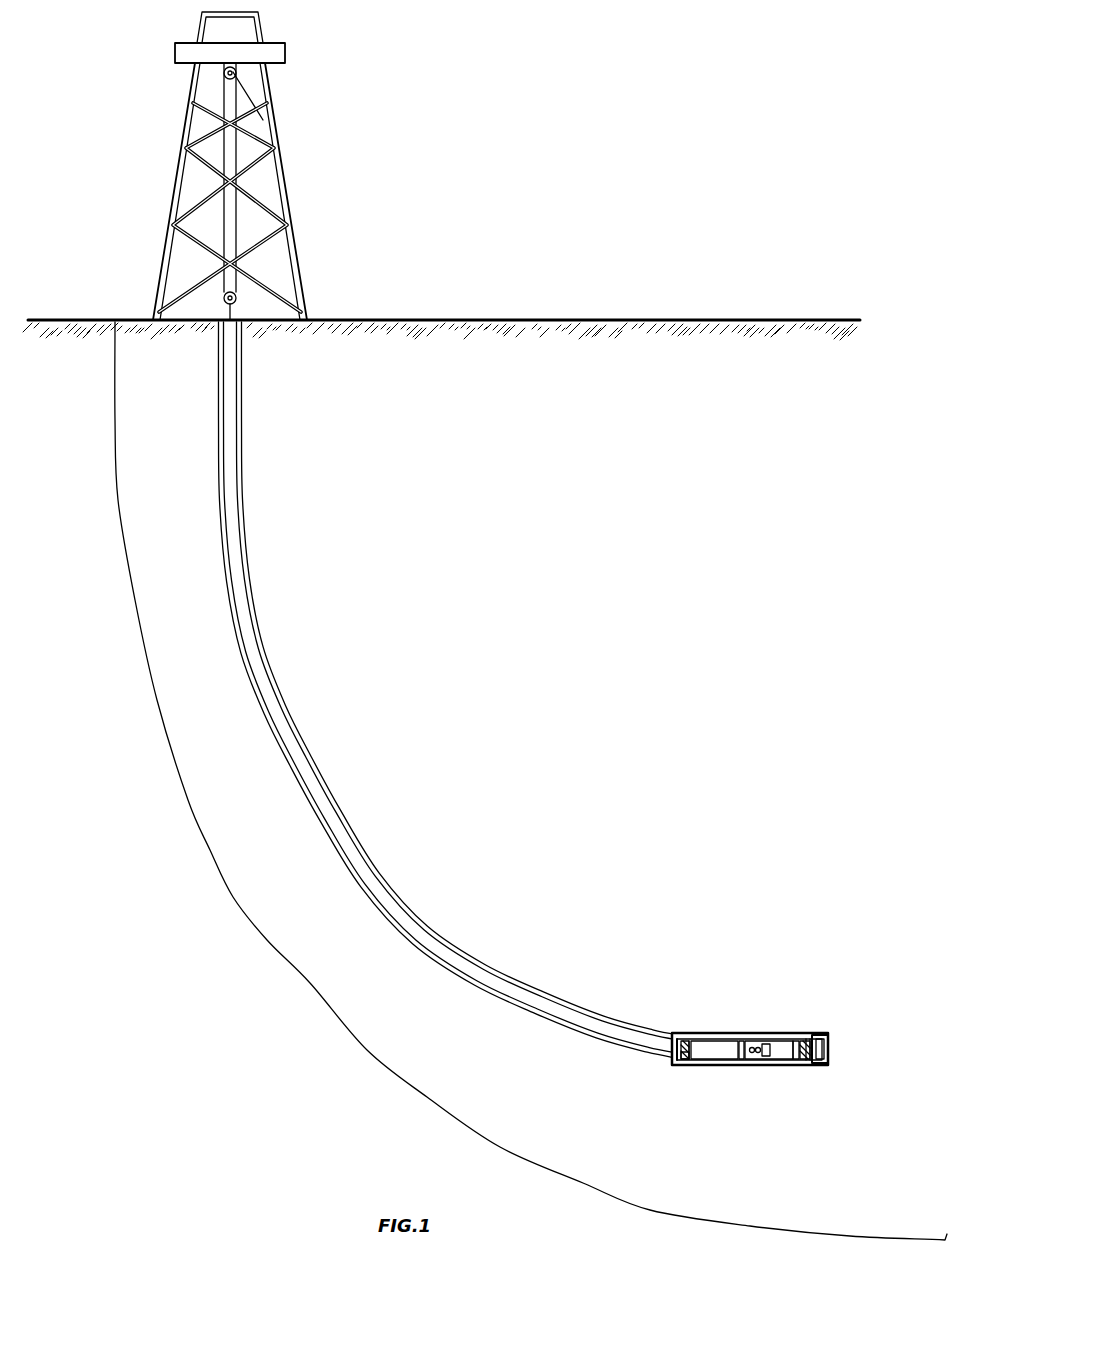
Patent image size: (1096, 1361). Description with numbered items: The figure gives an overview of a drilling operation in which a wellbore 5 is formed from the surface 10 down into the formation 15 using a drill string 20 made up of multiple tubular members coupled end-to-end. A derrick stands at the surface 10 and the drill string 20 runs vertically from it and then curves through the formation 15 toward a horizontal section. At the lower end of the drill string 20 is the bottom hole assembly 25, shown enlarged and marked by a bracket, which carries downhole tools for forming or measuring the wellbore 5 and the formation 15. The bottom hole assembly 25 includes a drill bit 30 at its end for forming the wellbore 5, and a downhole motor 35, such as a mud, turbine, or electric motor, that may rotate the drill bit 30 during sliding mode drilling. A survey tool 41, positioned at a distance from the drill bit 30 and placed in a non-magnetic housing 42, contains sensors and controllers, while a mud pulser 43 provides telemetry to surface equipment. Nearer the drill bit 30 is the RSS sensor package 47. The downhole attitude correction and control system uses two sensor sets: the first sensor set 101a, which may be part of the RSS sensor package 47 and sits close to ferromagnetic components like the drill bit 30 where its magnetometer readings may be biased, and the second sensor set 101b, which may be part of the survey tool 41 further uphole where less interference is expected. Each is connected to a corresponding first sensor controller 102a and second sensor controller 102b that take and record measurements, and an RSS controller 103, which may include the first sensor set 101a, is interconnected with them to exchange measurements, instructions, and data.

The wellbore 5 is at (497, 967).
The surface 10 is at (604, 320).
The formation 15 is at (490, 398).
The drill string 20 is at (237, 893).
The bottom hole assembly 25 is at (853, 921).
The drill bit 30 is at (830, 1038).
The downhole motor 35 is at (720, 1060).
The survey tool 41 is at (682, 1043).
The non-magnetic housing 42 is at (683, 1062).
The mud pulser 43 is at (743, 1042).
The RSS sensor package 47 is at (793, 1041).
The first sensor set 101a is at (798, 1063).
The second sensor set 101b is at (678, 1045).
The first sensor controller 102a is at (804, 1063).
The second sensor controller 102b is at (688, 1063).
The RSS controller 103 is at (806, 1040).